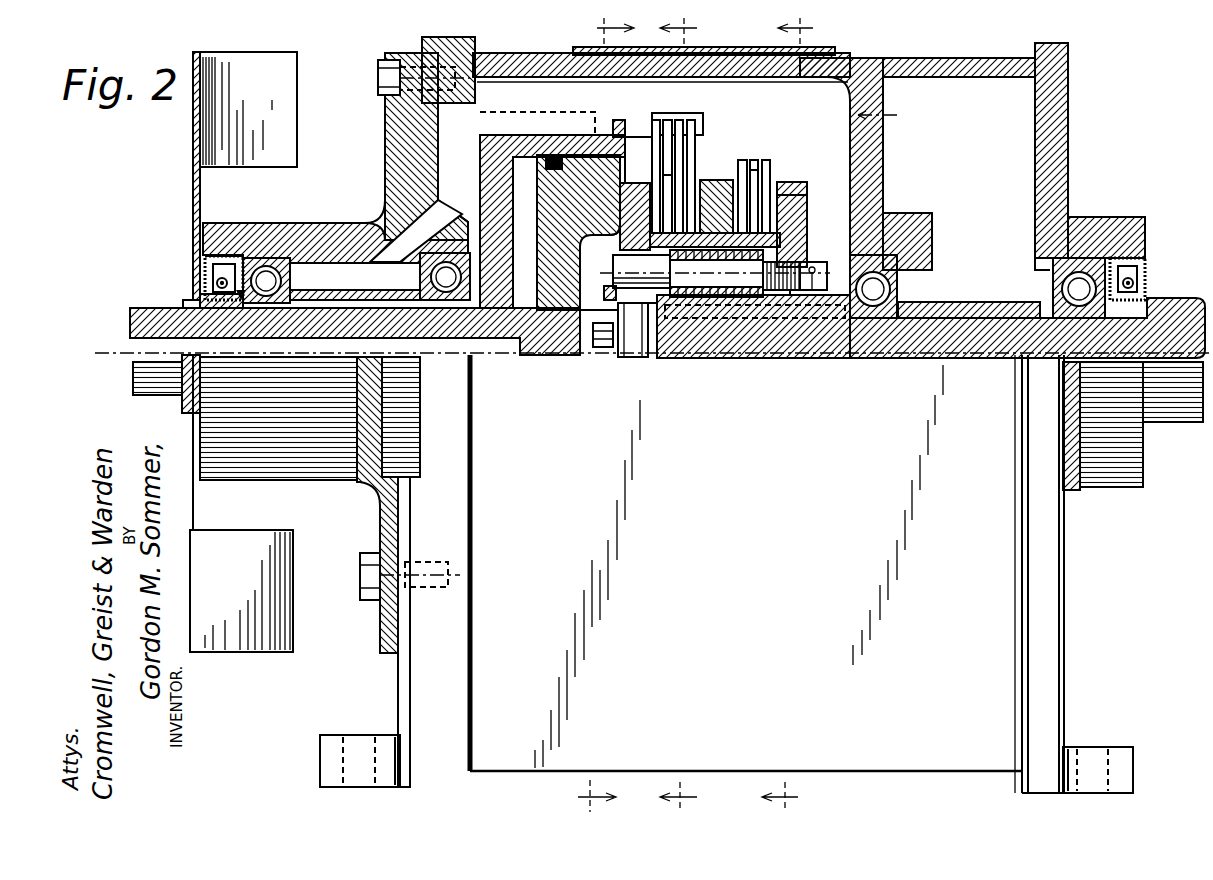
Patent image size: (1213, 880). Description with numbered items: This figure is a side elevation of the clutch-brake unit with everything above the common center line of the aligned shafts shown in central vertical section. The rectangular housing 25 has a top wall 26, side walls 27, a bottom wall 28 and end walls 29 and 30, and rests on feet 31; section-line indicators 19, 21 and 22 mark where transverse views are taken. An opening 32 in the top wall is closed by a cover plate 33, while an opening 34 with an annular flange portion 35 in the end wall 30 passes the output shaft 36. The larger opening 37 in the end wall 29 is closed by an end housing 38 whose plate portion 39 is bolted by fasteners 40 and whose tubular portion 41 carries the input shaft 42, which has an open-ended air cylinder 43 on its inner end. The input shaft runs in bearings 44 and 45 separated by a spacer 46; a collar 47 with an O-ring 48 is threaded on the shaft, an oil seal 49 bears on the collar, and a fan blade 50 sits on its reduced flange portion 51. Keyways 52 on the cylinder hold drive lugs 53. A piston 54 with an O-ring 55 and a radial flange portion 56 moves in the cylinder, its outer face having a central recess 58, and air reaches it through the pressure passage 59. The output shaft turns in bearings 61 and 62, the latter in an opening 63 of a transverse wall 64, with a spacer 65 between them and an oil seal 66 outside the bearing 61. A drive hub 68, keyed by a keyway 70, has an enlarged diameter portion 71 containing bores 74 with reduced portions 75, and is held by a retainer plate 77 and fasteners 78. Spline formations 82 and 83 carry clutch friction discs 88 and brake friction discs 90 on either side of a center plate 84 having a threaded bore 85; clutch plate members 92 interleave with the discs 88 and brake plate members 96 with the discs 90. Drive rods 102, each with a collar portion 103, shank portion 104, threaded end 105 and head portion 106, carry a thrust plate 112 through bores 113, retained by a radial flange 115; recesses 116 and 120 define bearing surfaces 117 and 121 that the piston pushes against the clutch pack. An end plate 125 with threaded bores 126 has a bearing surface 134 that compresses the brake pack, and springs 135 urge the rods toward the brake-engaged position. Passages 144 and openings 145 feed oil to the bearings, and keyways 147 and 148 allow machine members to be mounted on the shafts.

The section line 19 is at (592, 414).
The section line 21 is at (691, 414).
The section line 22 is at (800, 414).
The housing 25 is at (1081, 110).
The top wall 26 is at (967, 58).
The side walls 27 is at (965, 125).
The bottom wall 28 is at (860, 775).
The end wall 29 is at (398, 683).
The end wall 30 is at (1064, 648).
The feet 31 is at (322, 746).
The opening 32 is at (843, 80).
The cover plate 33 is at (753, 48).
The opening 34 is at (1040, 277).
The annular flange portion 35 is at (1120, 217).
The output shaft 36 is at (1168, 318).
The opening 37 is at (478, 75).
The end housing 38 is at (301, 215).
The plate portion 39 is at (386, 120).
The fasteners 40 is at (378, 62).
The tubular portion 41 is at (280, 234).
The input shaft 42 is at (150, 306).
The air cylinder 43 is at (487, 145).
The anti-friction bearing 44 is at (291, 279).
The anti-friction bearing 45 is at (419, 277).
The spacer 46 is at (366, 298).
The collar 47 is at (207, 280).
The O-ring 48 is at (241, 300).
The oil seal 49 is at (214, 258).
The fan blade 50 is at (205, 152).
The flange portion 51 is at (188, 303).
The keyways 52 is at (493, 134).
The drive lugs 53 is at (662, 118).
The piston 54 is at (537, 158).
The O-ring 55 is at (556, 155).
The radial flange portion 56 is at (619, 121).
The recess 58 is at (592, 320).
The pressure passage 59 is at (130, 337).
The anti-friction bearing 61 is at (1079, 272).
The anti-friction bearing 62 is at (933, 241).
The opening 63 is at (880, 234).
The transverse wall 64 is at (884, 157).
The spacer 65 is at (950, 302).
The oil seal 66 is at (1146, 270).
The drive hub 68 is at (836, 320).
The keyway 70 is at (740, 320).
The enlarged diameter portion 71 is at (808, 238).
The bores 74 is at (768, 300).
The reduced-in-diameter bore portion 75 is at (791, 298).
The retainer plate 77 is at (650, 320).
The fasteners 78 is at (604, 348).
The spline formation 82 is at (620, 237).
The spline formation 83 is at (808, 215).
The center plate 84 is at (742, 162).
The threaded internal bore 85 is at (715, 213).
The clutch friction discs 88 is at (686, 180).
The brake friction discs 90 is at (766, 190).
The clutch plate members 92 is at (690, 122).
The brake plate members 96 is at (754, 168).
The drive rods 102 is at (698, 300).
The collar portion 103 is at (660, 300).
The shank portion 104 is at (678, 300).
The threaded end 105 is at (808, 298).
The head portion 106 is at (715, 273).
The thrust plate 112 is at (616, 170).
The bores 113 is at (635, 358).
The radial flange 115 is at (614, 276).
The central recess 116 is at (614, 261).
The annular bearing surface 117 is at (608, 211).
The central recess 120 is at (606, 290).
The annular bearing surface 121 is at (616, 143).
The end plate 125 is at (816, 188).
The threaded bores 126 is at (800, 264).
The annular bearing surface 134 is at (795, 192).
The springs 135 is at (745, 322).
The passages 144 is at (440, 215).
The openings 145 is at (894, 109).
The keyway 147 is at (133, 362).
The keyway 148 is at (1150, 405).